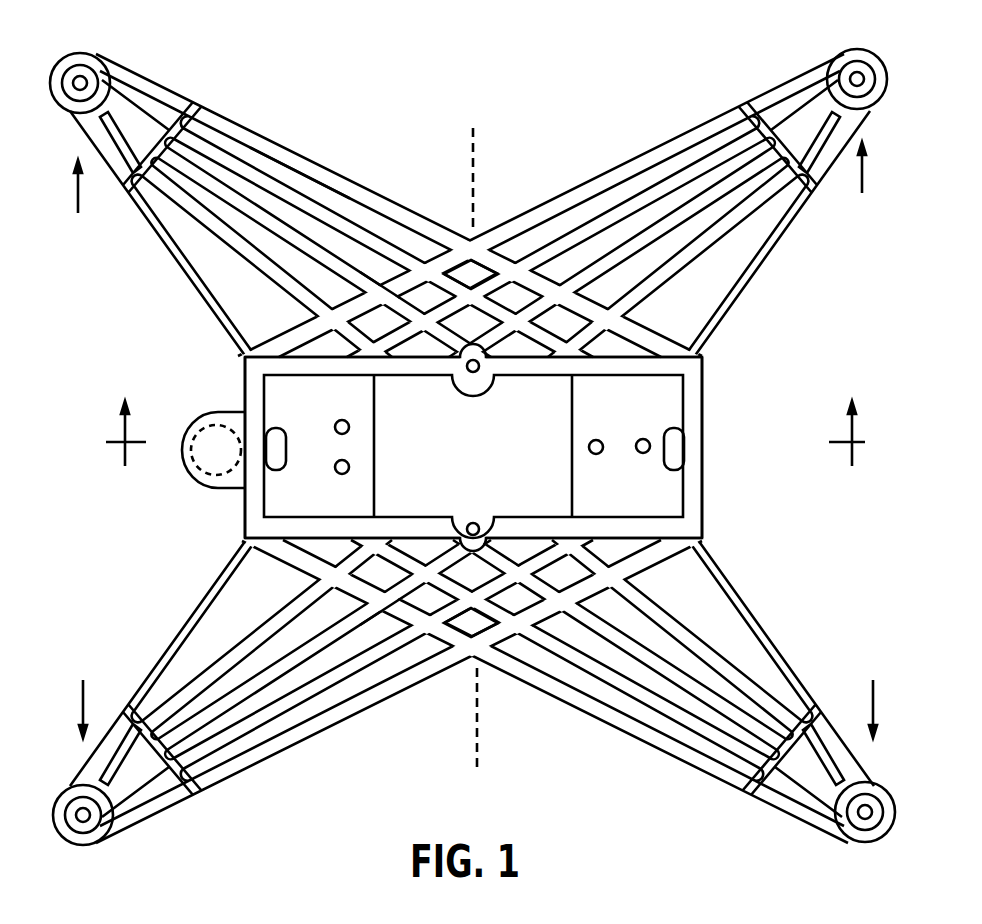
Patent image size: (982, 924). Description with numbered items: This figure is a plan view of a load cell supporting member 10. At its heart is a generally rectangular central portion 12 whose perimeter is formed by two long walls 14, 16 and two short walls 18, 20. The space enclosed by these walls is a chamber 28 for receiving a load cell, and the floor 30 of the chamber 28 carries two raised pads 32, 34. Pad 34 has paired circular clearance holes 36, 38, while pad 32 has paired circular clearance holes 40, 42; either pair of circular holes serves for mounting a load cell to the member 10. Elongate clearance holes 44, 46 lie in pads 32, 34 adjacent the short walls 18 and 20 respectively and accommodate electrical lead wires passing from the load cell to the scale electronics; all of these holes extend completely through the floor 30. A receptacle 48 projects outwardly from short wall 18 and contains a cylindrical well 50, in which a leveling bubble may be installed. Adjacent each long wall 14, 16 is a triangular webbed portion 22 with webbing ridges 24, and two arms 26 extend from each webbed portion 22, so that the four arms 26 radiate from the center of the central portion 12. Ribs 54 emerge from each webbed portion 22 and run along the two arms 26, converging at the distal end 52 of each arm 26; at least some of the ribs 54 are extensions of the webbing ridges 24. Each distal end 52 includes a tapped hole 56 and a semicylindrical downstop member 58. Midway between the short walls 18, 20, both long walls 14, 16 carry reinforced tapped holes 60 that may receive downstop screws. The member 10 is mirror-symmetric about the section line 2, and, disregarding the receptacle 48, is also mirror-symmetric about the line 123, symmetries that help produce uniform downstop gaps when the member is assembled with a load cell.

The load cell supporting member 10 is at (348, 84).
The central portion 12 is at (718, 483).
The long wall 14 is at (705, 387).
The long wall 16 is at (704, 500).
The short wall 18 is at (256, 502).
The short wall 20 is at (697, 458).
The triangular webbed portion 22 is at (478, 268).
The webbing ridge 24 is at (398, 307).
The arm 26 is at (280, 175).
The chamber 28 is at (403, 400).
The floor 30 is at (550, 444).
The raised pad 32 is at (634, 488).
The raised pad 34 is at (320, 494).
The circular clearance hole 36 is at (350, 427).
The circular clearance hole 38 is at (350, 467).
The circular clearance hole 40 is at (643, 439).
The circular clearance hole 42 is at (590, 455).
The elongate clearance hole 44 is at (278, 428).
The elongate clearance hole 46 is at (688, 425).
The receptacle 48 is at (190, 482).
The cylindrical well 50 is at (192, 425).
The distal end 52 is at (476, 440).
The rib 54 is at (337, 233).
The tapped hole 56 is at (90, 83).
The semicylindrical downstop member 58 is at (107, 92).
The reinforced tapped hole 60 is at (477, 374).
The line 123 is at (482, 140).
The line 2— 2 is at (483, 433).